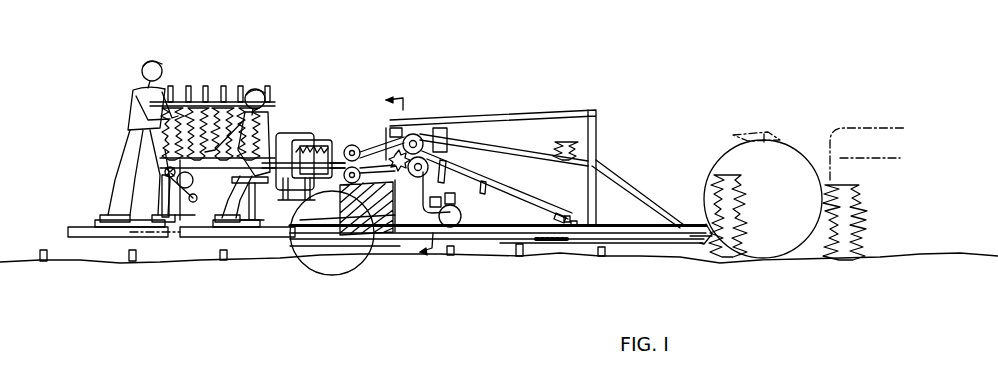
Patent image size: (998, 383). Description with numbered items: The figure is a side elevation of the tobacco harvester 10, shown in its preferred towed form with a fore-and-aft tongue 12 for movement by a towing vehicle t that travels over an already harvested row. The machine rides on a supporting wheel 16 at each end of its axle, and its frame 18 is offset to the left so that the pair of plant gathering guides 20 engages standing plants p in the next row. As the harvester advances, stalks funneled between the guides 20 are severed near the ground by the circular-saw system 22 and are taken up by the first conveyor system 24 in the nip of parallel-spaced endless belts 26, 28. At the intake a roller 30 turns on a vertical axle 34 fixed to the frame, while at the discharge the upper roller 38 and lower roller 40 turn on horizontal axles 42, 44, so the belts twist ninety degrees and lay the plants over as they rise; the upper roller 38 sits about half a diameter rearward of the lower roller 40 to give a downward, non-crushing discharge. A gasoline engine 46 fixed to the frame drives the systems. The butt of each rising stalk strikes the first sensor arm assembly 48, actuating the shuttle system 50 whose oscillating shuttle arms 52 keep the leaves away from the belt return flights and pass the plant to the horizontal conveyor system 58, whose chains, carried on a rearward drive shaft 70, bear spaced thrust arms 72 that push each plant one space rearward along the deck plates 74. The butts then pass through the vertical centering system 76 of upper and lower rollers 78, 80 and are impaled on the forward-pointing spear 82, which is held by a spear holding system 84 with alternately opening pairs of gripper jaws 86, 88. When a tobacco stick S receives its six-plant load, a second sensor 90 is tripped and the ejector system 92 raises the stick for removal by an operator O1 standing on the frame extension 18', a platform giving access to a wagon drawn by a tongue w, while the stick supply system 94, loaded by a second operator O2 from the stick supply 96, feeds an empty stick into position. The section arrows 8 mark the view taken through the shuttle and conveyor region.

The harvester 10 is at (653, 96).
The tongue 12 is at (683, 238).
The supporting wheel 16 is at (349, 271).
The frame 18 is at (498, 263).
The frame extension 18' is at (164, 209).
The tongue w is at (77, 228).
The plant gathering guides 20 is at (613, 172).
The circular-saw system 22 is at (562, 247).
The first conveyor system 24 is at (535, 146).
The endless belt 26 is at (512, 155).
The endless belt 28 is at (504, 200).
The roller 30 is at (562, 230).
The vertical axle 34 is at (578, 158).
The upper roller 38 is at (410, 136).
The lower roller 40 is at (457, 162).
The horizontal axle 42 is at (420, 158).
The horizontal axle 44 is at (371, 210).
The gasoline engine 46 is at (443, 229).
The first sensor arm assembly 48 is at (466, 180).
The shuttle system 50 is at (374, 225).
The shuttle arm 52 is at (407, 191).
The horizontal conveyor system 58 is at (378, 180).
The rearward drive shaft 70 is at (165, 171).
The thrust arms 72 is at (388, 150).
The deck plates 74 is at (278, 198).
The vertical centering system 76 is at (352, 142).
The upper roller 78 is at (362, 140).
The lower roller 80 is at (303, 209).
The spear 82 is at (338, 148).
The spear holding system 84 is at (295, 105).
The gripper jaws 86 is at (327, 130).
The gripper jaws 88 is at (285, 127).
The second sensor 90 is at (177, 160).
The ejector system 92 is at (200, 162).
The stick supply system 94 is at (195, 168).
The stick supply 96 is at (378, 258).
The section line 8 is at (399, 176).
The operator O1 is at (148, 82).
The operator O2 is at (254, 90).
The tobacco stick S is at (175, 112).
The towing vehicle t is at (858, 126).
The plants p is at (745, 199).